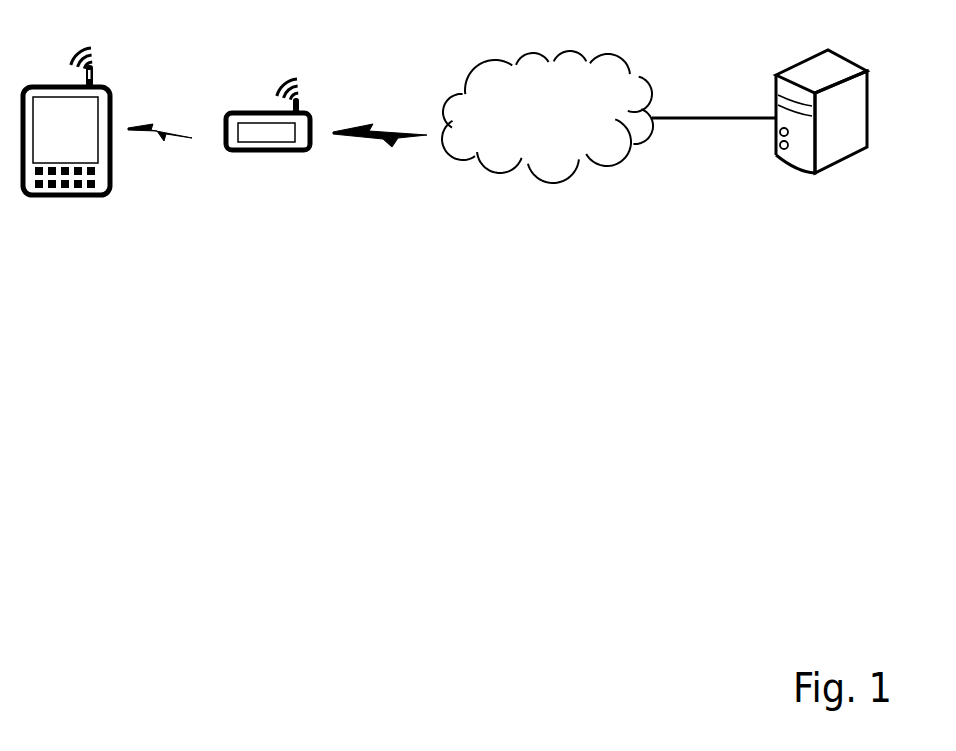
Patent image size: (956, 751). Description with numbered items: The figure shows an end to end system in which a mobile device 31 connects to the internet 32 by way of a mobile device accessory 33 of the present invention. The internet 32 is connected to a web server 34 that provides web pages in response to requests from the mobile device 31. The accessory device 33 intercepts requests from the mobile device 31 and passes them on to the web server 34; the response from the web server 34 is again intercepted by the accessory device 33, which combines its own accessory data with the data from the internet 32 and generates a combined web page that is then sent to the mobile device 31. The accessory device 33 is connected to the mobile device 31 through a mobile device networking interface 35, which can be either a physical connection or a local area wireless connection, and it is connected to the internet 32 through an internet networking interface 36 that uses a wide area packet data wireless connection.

The mobile device 31 is at (92, 196).
The internet 32 is at (620, 162).
The mobile device accessory 33 is at (262, 152).
The web server 34 is at (840, 160).
The mobile device networking interface 35 is at (175, 135).
The internet networking interface 36 is at (397, 135).